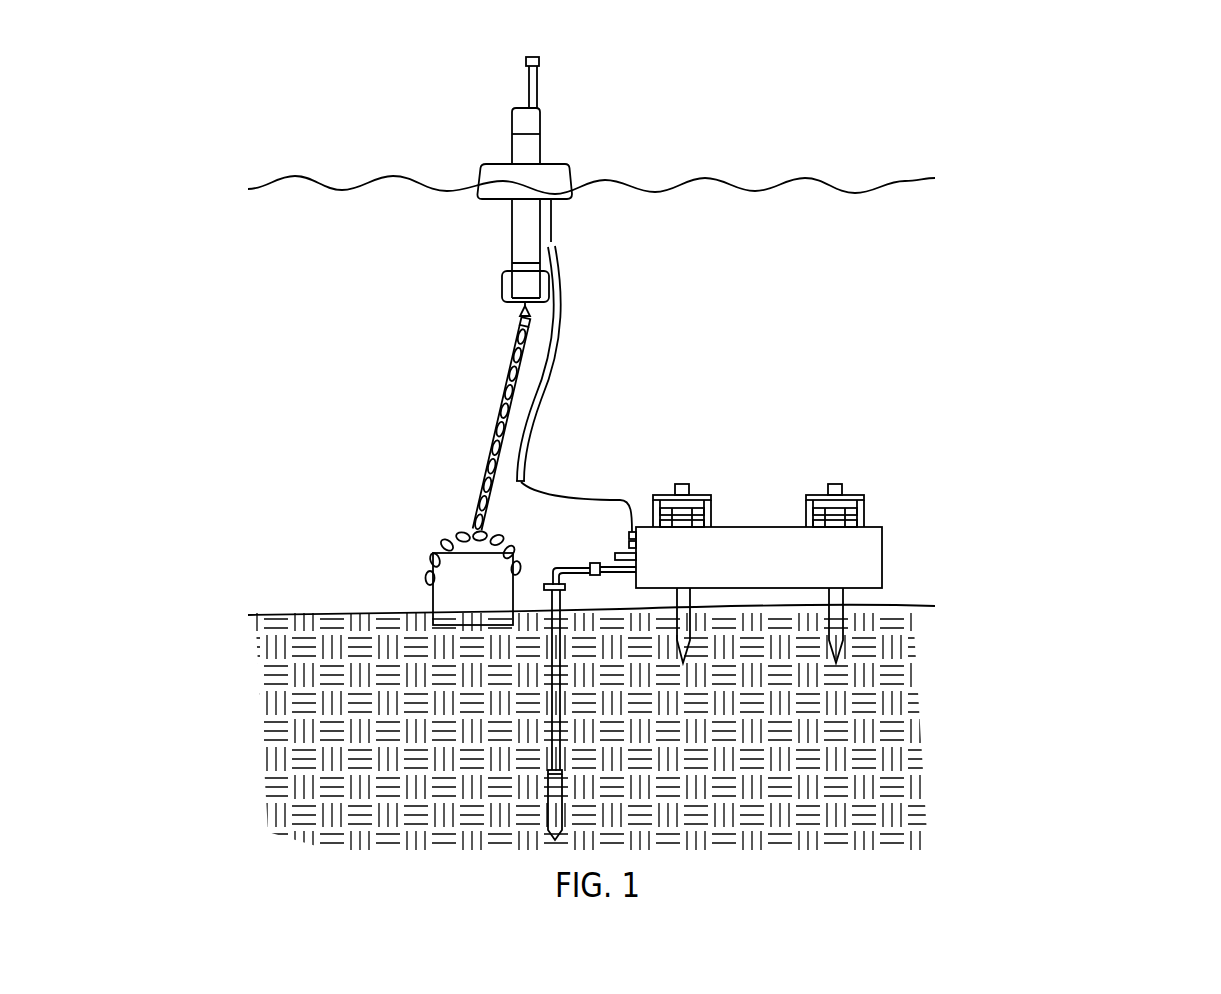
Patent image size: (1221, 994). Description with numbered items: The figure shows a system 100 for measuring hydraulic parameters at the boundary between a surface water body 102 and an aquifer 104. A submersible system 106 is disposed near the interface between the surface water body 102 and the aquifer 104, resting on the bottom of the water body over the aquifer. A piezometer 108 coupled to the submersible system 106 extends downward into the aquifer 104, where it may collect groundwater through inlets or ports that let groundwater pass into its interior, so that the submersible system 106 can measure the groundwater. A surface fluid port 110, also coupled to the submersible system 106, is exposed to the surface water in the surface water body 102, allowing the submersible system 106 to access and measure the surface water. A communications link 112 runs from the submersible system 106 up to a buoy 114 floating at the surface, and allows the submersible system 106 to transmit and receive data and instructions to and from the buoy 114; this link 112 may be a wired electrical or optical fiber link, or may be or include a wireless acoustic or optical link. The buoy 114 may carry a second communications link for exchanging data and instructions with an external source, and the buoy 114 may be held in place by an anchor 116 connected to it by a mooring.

The system for measuring hydraulic parameters 100 is at (1052, 92).
The surface water body 102 is at (882, 303).
The aquifer 104 is at (928, 783).
The submersible system 106 is at (882, 558).
The piezometer 108 is at (548, 733).
The surface fluid port 110 is at (638, 476).
The communications link 112 is at (550, 348).
The buoy 114 is at (539, 120).
The anchor 116 is at (437, 603).